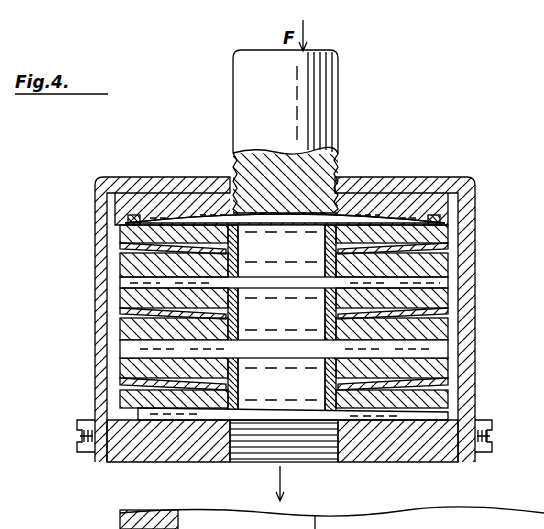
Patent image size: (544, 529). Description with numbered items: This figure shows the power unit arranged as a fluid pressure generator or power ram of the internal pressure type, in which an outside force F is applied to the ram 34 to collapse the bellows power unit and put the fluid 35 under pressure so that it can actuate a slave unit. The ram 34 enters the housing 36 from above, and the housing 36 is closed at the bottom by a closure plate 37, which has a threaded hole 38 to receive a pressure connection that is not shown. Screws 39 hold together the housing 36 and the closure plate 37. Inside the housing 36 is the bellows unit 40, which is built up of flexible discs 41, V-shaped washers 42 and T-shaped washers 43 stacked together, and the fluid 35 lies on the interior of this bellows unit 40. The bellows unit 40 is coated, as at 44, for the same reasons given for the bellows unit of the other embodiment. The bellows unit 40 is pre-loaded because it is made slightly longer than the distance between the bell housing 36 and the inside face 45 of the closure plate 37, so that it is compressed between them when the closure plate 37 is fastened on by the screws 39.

The ram 34 is at (338, 89).
The fluid 35 is at (362, 480).
The housing 36 is at (412, 178).
The closure plate 37 is at (150, 463).
The threaded hole 38 is at (272, 456).
The screws 39 is at (77, 424).
The bellows unit 40 is at (451, 316).
The flexible discs 41 is at (118, 262).
The V-shaped washers 42 is at (325, 318).
The T-shaped washers 43 is at (122, 348).
The coating 44 is at (484, 262).
The inside face 45 is at (420, 405).